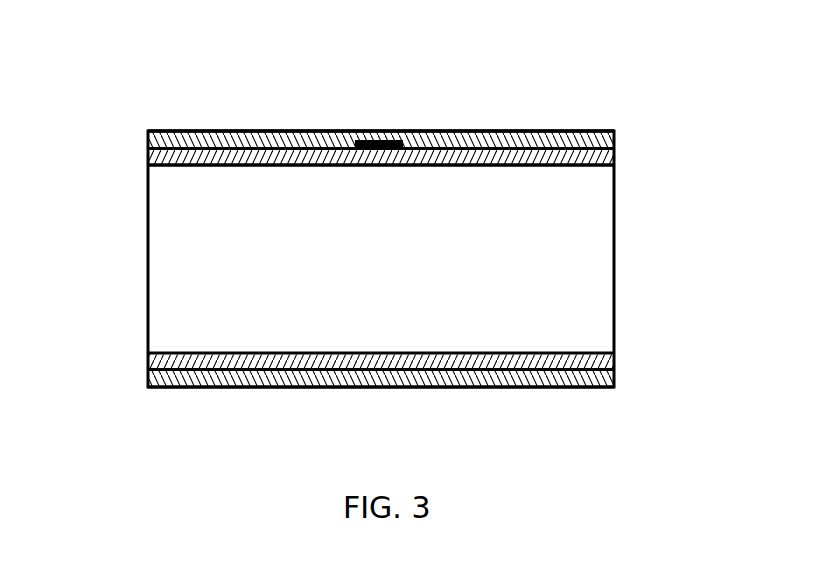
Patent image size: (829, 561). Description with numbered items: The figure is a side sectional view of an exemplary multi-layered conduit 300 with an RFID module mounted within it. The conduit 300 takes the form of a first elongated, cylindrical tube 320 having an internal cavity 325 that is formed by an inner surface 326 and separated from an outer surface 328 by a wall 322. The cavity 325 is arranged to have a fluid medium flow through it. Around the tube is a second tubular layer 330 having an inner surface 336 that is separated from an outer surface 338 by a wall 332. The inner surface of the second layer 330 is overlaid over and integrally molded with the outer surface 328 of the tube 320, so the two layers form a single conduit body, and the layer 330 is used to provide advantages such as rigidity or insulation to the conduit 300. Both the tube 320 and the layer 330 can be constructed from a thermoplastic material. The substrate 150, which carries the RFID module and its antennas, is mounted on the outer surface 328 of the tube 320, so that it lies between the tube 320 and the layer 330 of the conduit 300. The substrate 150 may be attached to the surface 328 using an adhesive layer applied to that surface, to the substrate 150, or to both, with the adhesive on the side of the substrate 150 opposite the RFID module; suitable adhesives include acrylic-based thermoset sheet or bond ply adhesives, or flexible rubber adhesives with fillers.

The conduit 300 is at (551, 71).
The second tubular layer 330 is at (277, 113).
The outer surface 328 is at (160, 145).
The wall 322 is at (200, 153).
The inner surface 326 is at (476, 165).
The substrate 150 is at (383, 131).
The wall 332 is at (600, 140).
The outer surface 338 is at (350, 388).
The inner surface 336 is at (497, 370).
The first elongated cylindrical tube 320 is at (326, 187).
The internal cavity 325 is at (404, 270).